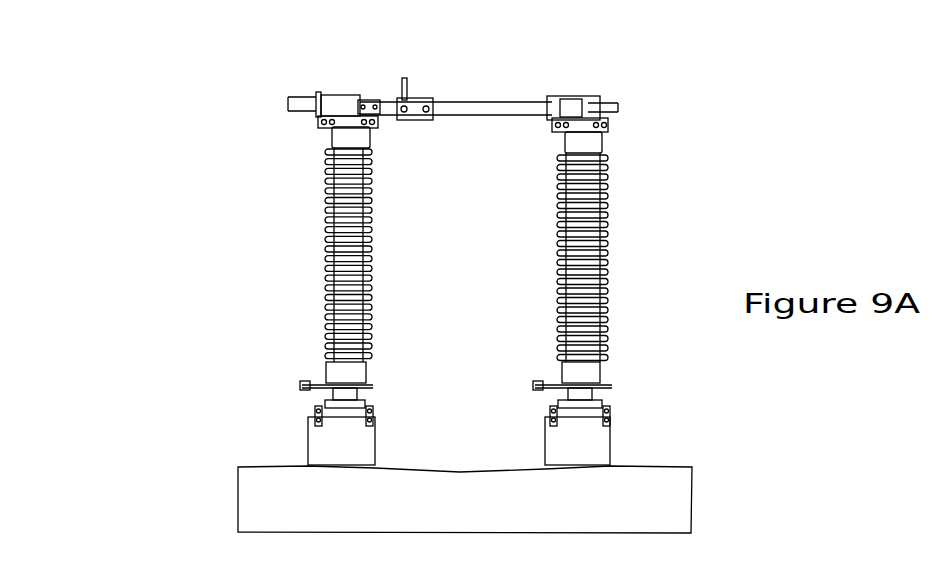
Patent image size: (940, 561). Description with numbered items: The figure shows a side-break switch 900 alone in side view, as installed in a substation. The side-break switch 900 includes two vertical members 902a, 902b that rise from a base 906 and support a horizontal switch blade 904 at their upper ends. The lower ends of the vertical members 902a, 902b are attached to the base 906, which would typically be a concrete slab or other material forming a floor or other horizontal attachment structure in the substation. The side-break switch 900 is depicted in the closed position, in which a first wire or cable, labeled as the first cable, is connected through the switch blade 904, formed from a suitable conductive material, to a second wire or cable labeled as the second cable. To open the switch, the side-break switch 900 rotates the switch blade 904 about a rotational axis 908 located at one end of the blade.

The side-break switch 900 is at (752, 207).
The vertical member 902a is at (326, 226).
The vertical member 902b is at (604, 240).
The horizontal switch blade 904 is at (462, 105).
The base 906 is at (465, 499).
The rotational axis 908 is at (587, 96).